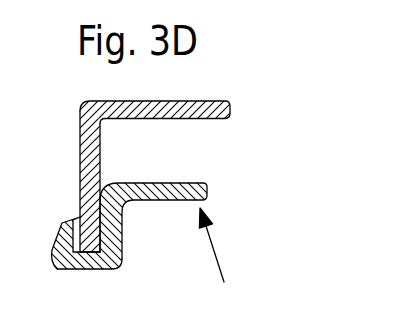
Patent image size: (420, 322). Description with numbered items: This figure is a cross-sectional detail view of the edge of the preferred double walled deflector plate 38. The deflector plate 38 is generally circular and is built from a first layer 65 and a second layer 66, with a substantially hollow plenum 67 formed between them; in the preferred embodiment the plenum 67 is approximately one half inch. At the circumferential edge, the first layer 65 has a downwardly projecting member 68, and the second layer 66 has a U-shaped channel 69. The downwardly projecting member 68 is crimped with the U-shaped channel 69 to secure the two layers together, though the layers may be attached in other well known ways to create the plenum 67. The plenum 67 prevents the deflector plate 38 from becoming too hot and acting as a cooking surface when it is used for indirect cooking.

The first layer 65 is at (215, 101).
The second layer 66 is at (165, 200).
The plenum 67 is at (173, 157).
The downwardly projecting member 68 is at (80, 153).
The U-shaped channel 69 is at (83, 267).
The deflector plate 38 is at (218, 258).